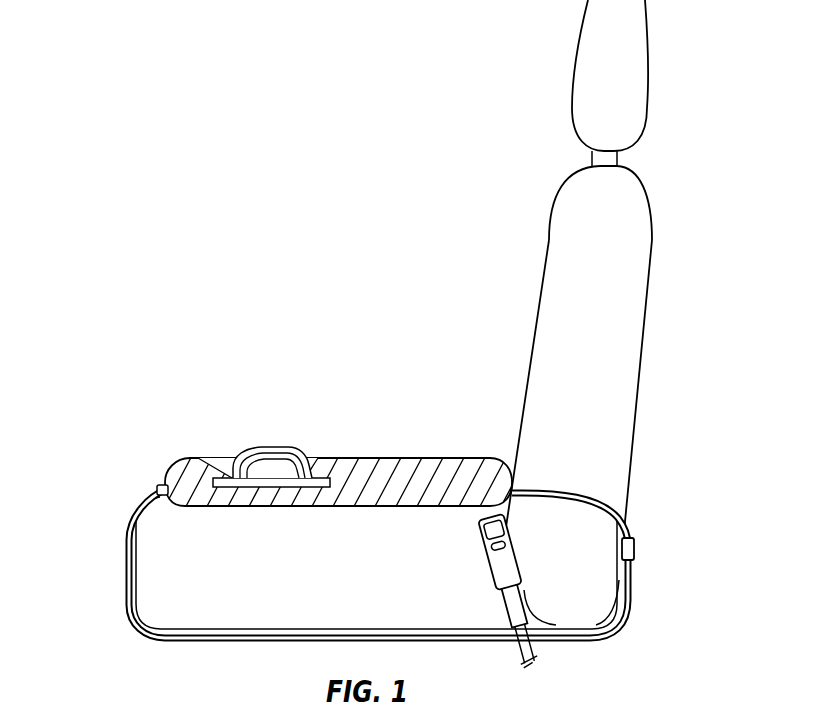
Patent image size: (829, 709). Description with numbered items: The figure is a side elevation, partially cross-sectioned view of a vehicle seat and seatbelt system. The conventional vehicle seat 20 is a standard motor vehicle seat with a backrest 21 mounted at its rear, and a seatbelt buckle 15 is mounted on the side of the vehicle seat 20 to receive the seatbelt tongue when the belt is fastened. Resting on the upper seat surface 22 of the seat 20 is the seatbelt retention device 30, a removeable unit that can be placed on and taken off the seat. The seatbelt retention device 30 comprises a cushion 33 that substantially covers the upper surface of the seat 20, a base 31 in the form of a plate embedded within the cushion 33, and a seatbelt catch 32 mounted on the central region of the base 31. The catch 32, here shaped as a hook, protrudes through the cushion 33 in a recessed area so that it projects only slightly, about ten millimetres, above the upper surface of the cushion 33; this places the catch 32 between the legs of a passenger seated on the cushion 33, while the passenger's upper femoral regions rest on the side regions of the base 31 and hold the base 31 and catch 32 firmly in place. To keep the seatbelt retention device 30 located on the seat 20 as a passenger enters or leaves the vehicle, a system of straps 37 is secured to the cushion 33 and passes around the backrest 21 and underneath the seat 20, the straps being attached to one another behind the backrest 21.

The seatbelt buckle 15 is at (508, 563).
The vehicle seat 20 is at (225, 563).
The backrest 21 is at (594, 295).
The upper seat surface 22 is at (152, 488).
The seatbelt retention device 30 is at (325, 407).
The base 31 is at (325, 478).
The seatbelt catch 32 is at (262, 450).
The cushion 33 is at (446, 458).
The straps 37 is at (126, 540).